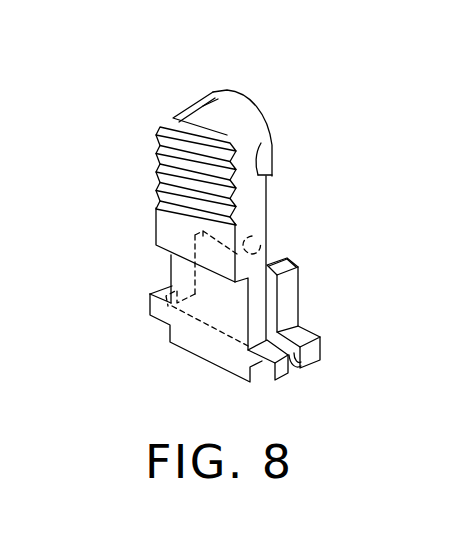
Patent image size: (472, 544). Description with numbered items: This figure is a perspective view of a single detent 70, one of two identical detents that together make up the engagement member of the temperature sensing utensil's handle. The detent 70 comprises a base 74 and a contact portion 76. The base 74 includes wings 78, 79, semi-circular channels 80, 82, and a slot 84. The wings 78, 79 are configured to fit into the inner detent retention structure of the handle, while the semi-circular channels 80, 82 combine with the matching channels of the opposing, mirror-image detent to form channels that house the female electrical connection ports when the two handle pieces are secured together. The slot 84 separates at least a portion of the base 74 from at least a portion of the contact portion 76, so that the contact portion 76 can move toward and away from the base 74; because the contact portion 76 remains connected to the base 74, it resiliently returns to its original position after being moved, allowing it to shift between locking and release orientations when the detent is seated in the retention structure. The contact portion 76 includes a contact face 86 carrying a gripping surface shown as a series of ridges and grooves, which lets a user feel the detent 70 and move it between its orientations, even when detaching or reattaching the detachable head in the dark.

The detent 70 is at (164, 104).
The contact portion 76 is at (243, 122).
The contact face 86 is at (160, 166).
The semi-circular channel 80 is at (252, 236).
The semi-circular channel 82 is at (287, 257).
The base 74 is at (300, 307).
The wing 78 is at (151, 300).
The wing 79 is at (319, 356).
The slot 84 is at (300, 368).